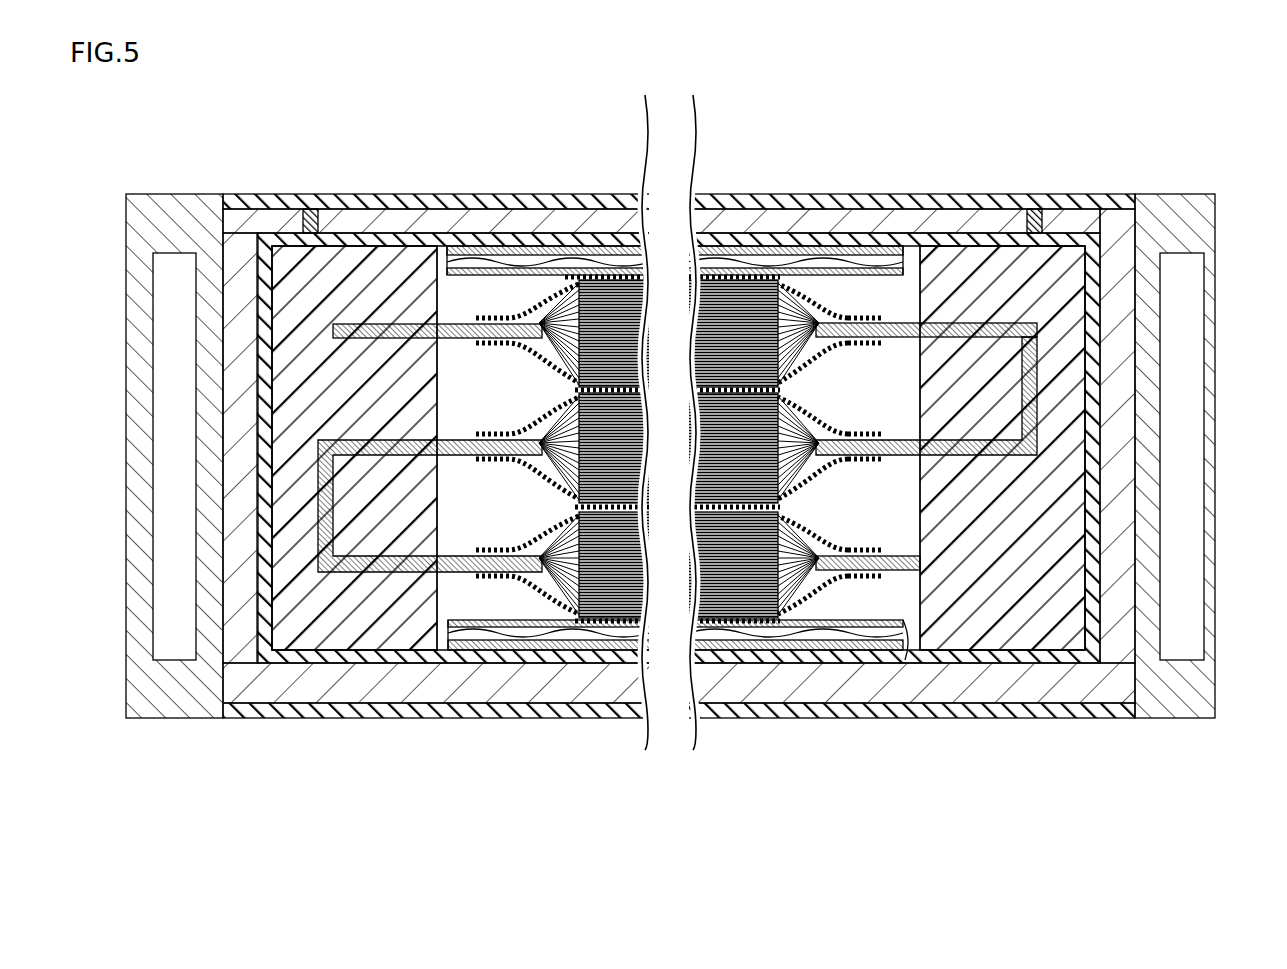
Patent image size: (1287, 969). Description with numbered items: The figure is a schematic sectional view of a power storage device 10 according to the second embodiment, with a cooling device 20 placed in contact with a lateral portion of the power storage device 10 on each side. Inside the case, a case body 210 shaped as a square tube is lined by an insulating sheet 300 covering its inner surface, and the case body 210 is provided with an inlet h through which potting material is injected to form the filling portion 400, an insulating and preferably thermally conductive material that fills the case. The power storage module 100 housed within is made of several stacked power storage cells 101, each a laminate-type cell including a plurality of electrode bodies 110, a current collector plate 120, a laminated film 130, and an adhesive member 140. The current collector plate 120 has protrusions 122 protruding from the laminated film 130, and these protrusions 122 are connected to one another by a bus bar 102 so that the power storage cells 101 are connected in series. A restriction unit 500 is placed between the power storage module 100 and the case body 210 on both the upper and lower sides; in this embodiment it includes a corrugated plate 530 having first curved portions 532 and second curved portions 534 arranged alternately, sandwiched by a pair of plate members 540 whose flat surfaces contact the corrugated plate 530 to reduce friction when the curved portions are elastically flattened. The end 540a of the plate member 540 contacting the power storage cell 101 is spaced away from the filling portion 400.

The cooling device 20 is at (167, 193).
The insulating sheet 300 is at (250, 200).
The power storage device 10 is at (340, 192).
The case body 210 is at (1093, 222).
The inlet h is at (312, 205).
The bus bar 102 is at (305, 525).
The filling portion 400 is at (410, 265).
The protrusion 122 is at (393, 322).
The electrode body 110 is at (742, 292).
The power storage module 100 is at (540, 282).
The power storage cell 101 is at (798, 349).
The laminated film 130 is at (813, 312).
The current collector plate 120 is at (840, 318).
The adhesive member 140 is at (867, 323).
The restriction unit 500 is at (680, 434).
The corrugated plate 530 is at (570, 247).
The plate member 540 is at (605, 262).
The first curved portion 532 is at (760, 630).
The second curved portion 534 is at (797, 642).
The end of plate member 540a is at (448, 258).